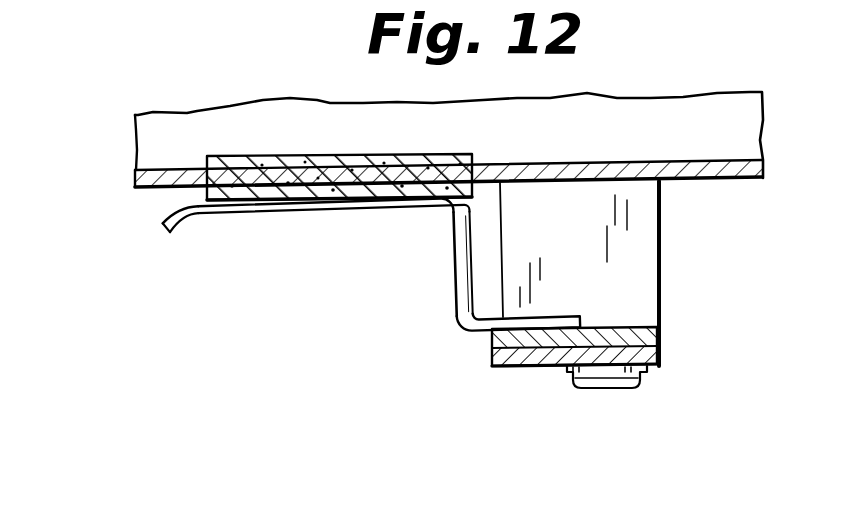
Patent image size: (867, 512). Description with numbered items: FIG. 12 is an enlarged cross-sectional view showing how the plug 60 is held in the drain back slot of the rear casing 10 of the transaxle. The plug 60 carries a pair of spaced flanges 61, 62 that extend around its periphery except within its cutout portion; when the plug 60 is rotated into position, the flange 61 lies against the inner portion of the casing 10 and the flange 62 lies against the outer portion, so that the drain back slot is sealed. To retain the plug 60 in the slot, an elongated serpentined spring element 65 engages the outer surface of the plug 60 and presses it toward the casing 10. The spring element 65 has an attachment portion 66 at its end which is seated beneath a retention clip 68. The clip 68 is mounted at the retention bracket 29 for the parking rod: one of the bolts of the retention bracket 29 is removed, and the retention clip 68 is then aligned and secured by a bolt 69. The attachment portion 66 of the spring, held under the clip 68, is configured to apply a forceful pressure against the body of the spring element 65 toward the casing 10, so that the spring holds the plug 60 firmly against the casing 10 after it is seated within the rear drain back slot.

The rear casing 10 is at (697, 190).
The retention bracket 29 is at (628, 327).
The plug 60 is at (321, 291).
The flange 61 is at (474, 158).
The flange 62 is at (472, 187).
The serpentined spring element 65 is at (162, 206).
The attachment portion 66 is at (480, 334).
The retention clip 68 is at (661, 356).
The bolt 69 is at (615, 388).